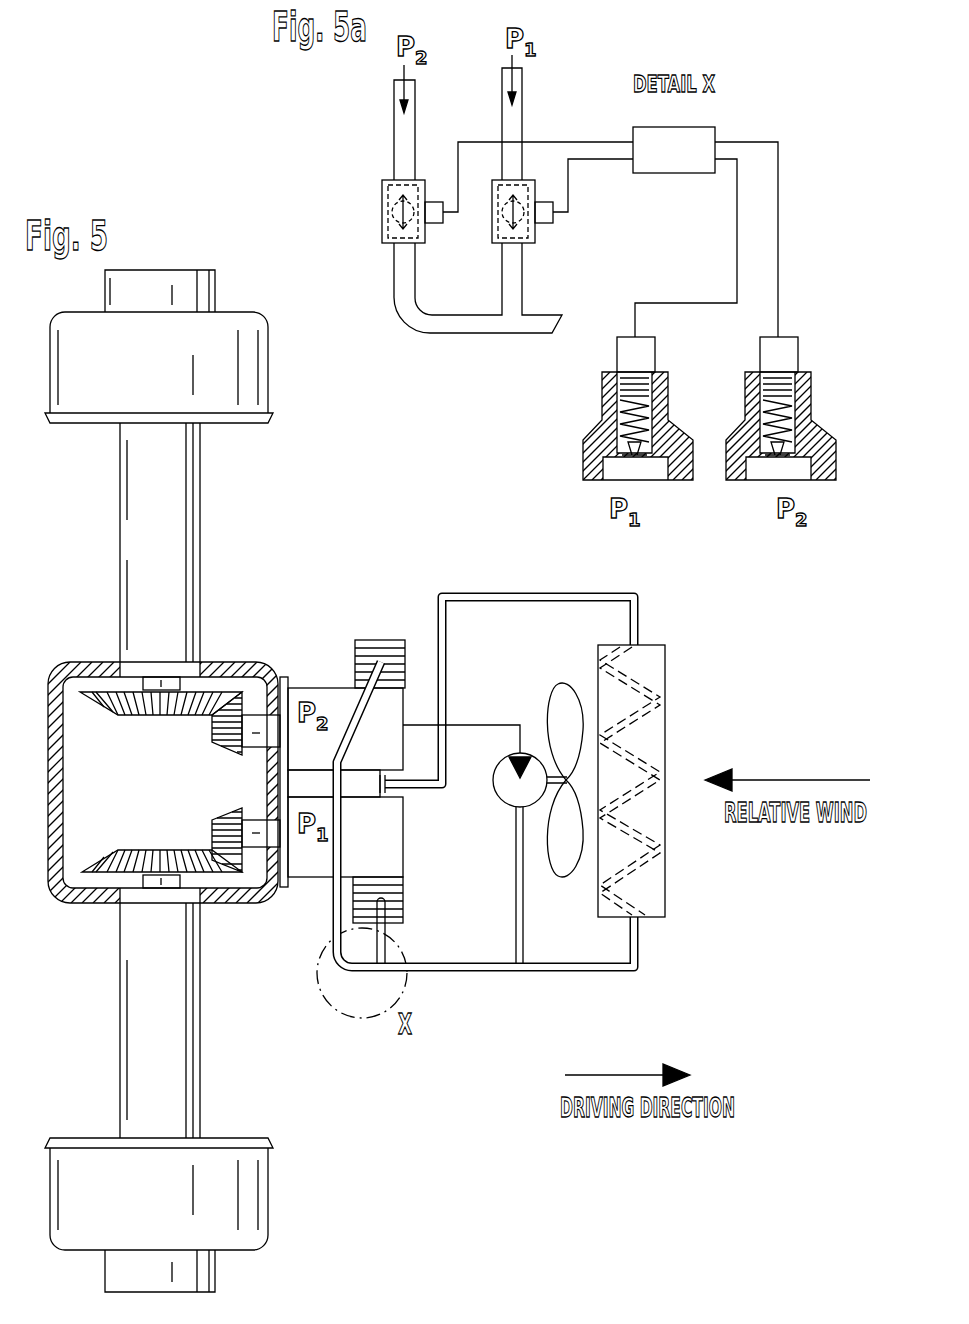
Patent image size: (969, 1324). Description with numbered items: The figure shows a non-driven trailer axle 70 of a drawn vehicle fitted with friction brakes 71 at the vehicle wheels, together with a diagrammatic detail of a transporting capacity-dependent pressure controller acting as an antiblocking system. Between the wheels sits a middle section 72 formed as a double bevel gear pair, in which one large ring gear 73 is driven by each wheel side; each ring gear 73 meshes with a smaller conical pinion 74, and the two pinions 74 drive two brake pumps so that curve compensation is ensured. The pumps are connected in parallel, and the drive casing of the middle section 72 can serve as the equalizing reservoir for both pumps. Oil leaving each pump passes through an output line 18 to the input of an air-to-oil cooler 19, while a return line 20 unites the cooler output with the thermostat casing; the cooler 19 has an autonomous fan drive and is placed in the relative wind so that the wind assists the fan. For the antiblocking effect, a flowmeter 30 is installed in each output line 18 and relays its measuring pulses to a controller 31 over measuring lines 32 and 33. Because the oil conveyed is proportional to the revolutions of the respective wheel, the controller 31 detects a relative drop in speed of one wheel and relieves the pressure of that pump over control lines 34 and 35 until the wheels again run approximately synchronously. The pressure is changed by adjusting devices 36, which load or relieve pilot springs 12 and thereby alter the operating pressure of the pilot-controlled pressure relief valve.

In FIG. 5A, the pilot spring 12 is at (756, 406).
In FIG. 5A, the output line 18 is at (400, 124).
In FIG. 5, the output line 18 is at (340, 830).
In FIG. 5, the air-to-oil cooler 19 is at (655, 682).
In FIG. 5, the return line 20 is at (447, 683).
In FIG. 5A, the flowmeter 30 is at (492, 238).
In FIG. 5A, the controller 31 is at (674, 150).
In FIG. 5A, the measuring line 32 is at (568, 215).
In FIG. 5A, the measuring line 33 is at (580, 142).
In FIG. 5A, the control line 34 is at (737, 222).
In FIG. 5A, the control line 35 is at (778, 190).
In FIG. 5A, the adjusting device 36 is at (760, 354).
In FIG. 5, the trailer axle 70 is at (127, 995).
In FIG. 5, the friction brake 71 is at (262, 382).
In FIG. 5, the middle section 72 is at (105, 905).
In FIG. 5, the large ring gear 73 is at (122, 715).
In FIG. 5, the smaller conical pinion 74 is at (212, 735).